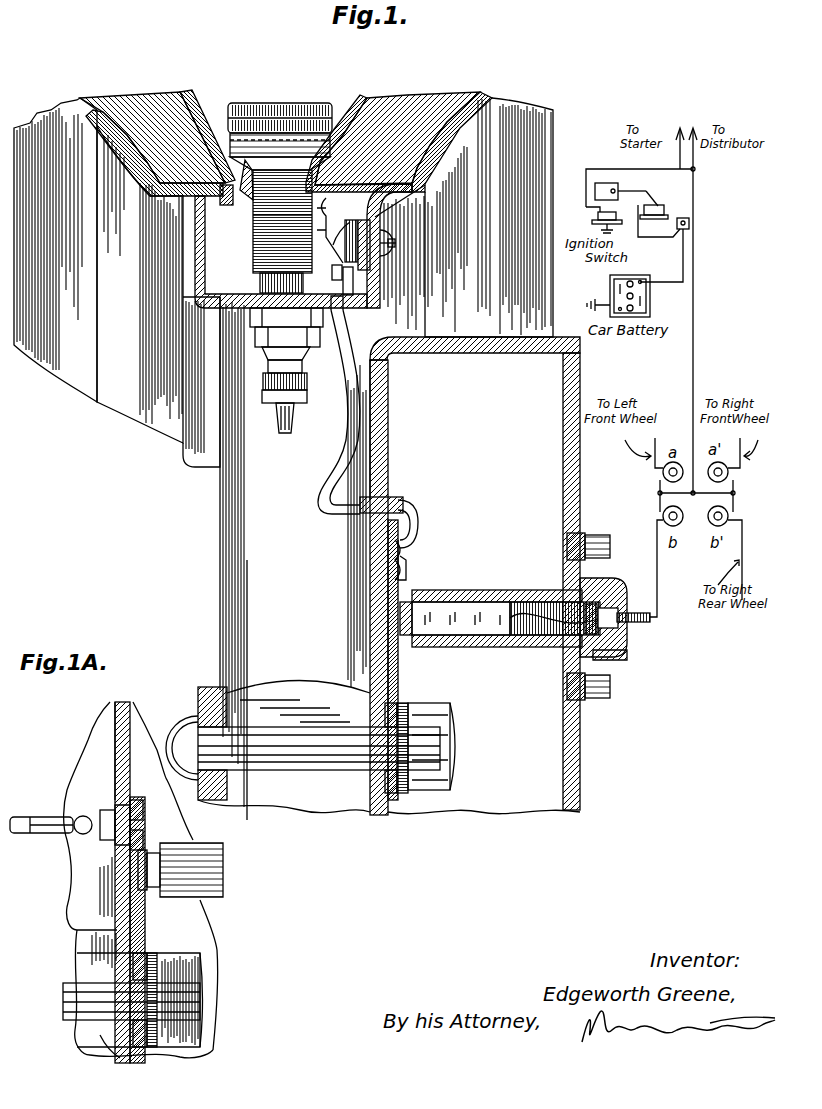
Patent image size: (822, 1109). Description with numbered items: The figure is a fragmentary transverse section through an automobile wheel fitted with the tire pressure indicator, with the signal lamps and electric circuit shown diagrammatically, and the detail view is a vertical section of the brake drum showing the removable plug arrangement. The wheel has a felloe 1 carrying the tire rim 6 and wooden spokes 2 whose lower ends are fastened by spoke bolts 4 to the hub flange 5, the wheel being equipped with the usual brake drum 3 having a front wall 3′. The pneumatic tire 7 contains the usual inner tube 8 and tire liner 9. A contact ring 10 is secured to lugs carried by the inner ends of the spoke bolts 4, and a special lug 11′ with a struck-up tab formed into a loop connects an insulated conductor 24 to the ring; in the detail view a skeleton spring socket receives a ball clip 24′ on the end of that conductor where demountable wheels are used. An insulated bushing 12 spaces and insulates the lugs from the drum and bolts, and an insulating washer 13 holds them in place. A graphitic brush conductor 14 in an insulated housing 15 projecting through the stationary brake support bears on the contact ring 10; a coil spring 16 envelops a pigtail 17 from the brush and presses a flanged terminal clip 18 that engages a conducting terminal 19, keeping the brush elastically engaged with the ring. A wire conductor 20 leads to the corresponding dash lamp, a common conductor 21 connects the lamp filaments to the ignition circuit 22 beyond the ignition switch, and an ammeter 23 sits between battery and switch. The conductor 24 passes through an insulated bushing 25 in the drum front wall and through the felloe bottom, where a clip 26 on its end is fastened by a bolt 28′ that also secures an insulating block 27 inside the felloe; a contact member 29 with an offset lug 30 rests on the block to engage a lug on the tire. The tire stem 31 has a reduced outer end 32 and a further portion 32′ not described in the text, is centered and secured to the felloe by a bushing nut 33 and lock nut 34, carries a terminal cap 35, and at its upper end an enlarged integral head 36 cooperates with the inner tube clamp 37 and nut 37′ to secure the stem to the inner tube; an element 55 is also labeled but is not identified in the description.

In FIG. 1, the felloe 1 is at (196, 240).
In FIG. 1, the wooden spokes 2 is at (232, 490).
In FIG. 1A, the wooden spokes 2 is at (88, 742).
In FIG. 1, the brake drum 3 is at (472, 340).
In FIG. 1A, the brake drum 3 is at (135, 718).
In FIG. 1, the front wall of the brake drum 3′ is at (388, 470).
In FIG. 1A, the front wall of the brake drum 3′ is at (115, 770).
In FIG. 1, the spoke bolts 4 is at (272, 745).
In FIG. 1A, the spoke bolts 4 is at (75, 998).
In FIG. 1, the hub flange 5 is at (212, 700).
In FIG. 1, the tire rim 6 is at (145, 172).
In FIG. 1, the tire 7 is at (145, 96).
In FIG. 1, the inner tube 8 is at (203, 98).
In FIG. 1, the tire liner 9 is at (380, 100).
In FIG. 1, the contact ring 10 is at (410, 600).
In FIG. 1A, the contact ring 10 is at (143, 852).
In FIG. 1, the special lug 11′ is at (398, 670).
In FIG. 1A, the special lug 11′ is at (147, 925).
In FIG. 1, the insulated bushing 12 is at (385, 712).
In FIG. 1A, the insulated bushing 12 is at (133, 967).
In FIG. 1, the insulating washer 13 is at (398, 795).
In FIG. 1A, the insulating washer 13 is at (155, 1048).
In FIG. 1, the brush conductor 14 is at (452, 600).
In FIG. 1A, the brush conductor 14 is at (160, 870).
In FIG. 1, the insulated housing 15 is at (490, 600).
In FIG. 1A, the insulated housing 15 is at (223, 870).
In FIG. 1, the coil spring 16 is at (560, 640).
In FIG. 1, the pigtail 17 is at (537, 600).
In FIG. 1, the flanged terminal clip 18 is at (600, 590).
In FIG. 1, the conducting terminal 19 is at (615, 658).
In FIG. 1, the wire conductor 20 is at (655, 468).
In FIG. 1, the common conductor 21 is at (694, 352).
In FIG. 1, the ignition circuit 22 is at (598, 169).
In FIG. 1, the ammeter 23 is at (662, 206).
In FIG. 1, the conductor 24 is at (320, 490).
In FIG. 1A, the conductor 24 is at (22, 817).
In FIG. 1A, the ball clip 24′ is at (75, 832).
In FIG. 1, the insulated bushing 25 is at (400, 505).
In FIG. 1A, the insulated bushing 25 is at (115, 818).
In FIG. 1, the clip 26 is at (352, 282).
In FIG. 1, the insulating block 27 is at (364, 222).
In FIG. 1, the bolt 28′ is at (394, 247).
In FIG. 1, the contact member 29 is at (334, 245).
In FIG. 1, the offset lug 30 is at (333, 273).
In FIG. 1, the tire stem 31 is at (256, 250).
In FIG. 1, the reduced cross section outer end 32 is at (262, 290).
In FIG. 1, the knurled nut 32′ is at (296, 380).
In FIG. 1, the bushing nut 33 is at (250, 318).
In FIG. 1, the lock nut 34 is at (258, 340).
In FIG. 1, the terminal cap 35 is at (290, 415).
In FIG. 1, the enlarged integral head 36 is at (318, 104).
In FIG. 1, the inner tube clamp 37 is at (268, 150).
In FIG. 1, the nut 37′ is at (245, 180).
In FIG. 1, the thread line 55 is at (310, 255).